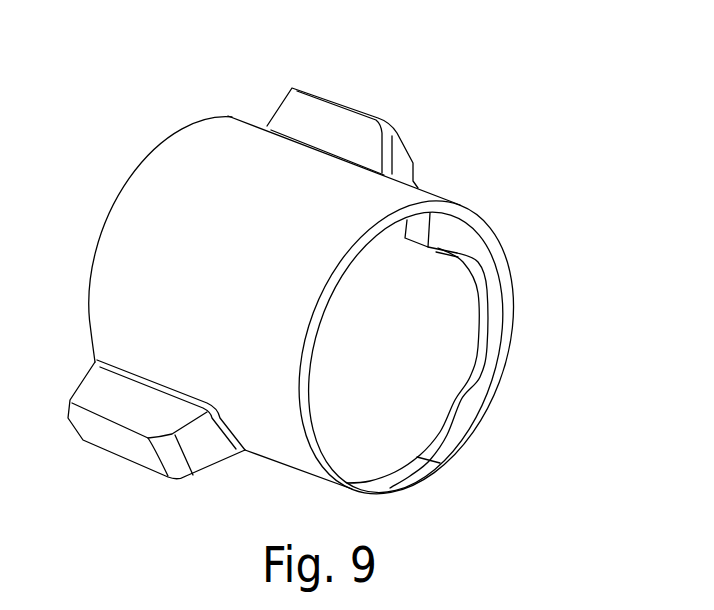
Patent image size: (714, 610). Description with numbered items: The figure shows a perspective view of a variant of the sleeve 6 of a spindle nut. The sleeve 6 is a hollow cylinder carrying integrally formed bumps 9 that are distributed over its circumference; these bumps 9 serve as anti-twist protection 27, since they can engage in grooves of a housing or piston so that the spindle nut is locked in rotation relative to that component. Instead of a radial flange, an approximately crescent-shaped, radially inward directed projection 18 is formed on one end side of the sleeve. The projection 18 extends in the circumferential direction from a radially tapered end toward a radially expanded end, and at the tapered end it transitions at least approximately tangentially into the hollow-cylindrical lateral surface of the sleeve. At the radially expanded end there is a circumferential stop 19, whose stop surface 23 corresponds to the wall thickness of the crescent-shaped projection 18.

The sleeve 6 is at (178, 187).
The bumps 9 is at (342, 106).
The anti-twist protection 27 is at (328, 130).
The projection 18 is at (473, 242).
The circumferential stop 19 is at (428, 276).
The stop surface 23 is at (412, 232).